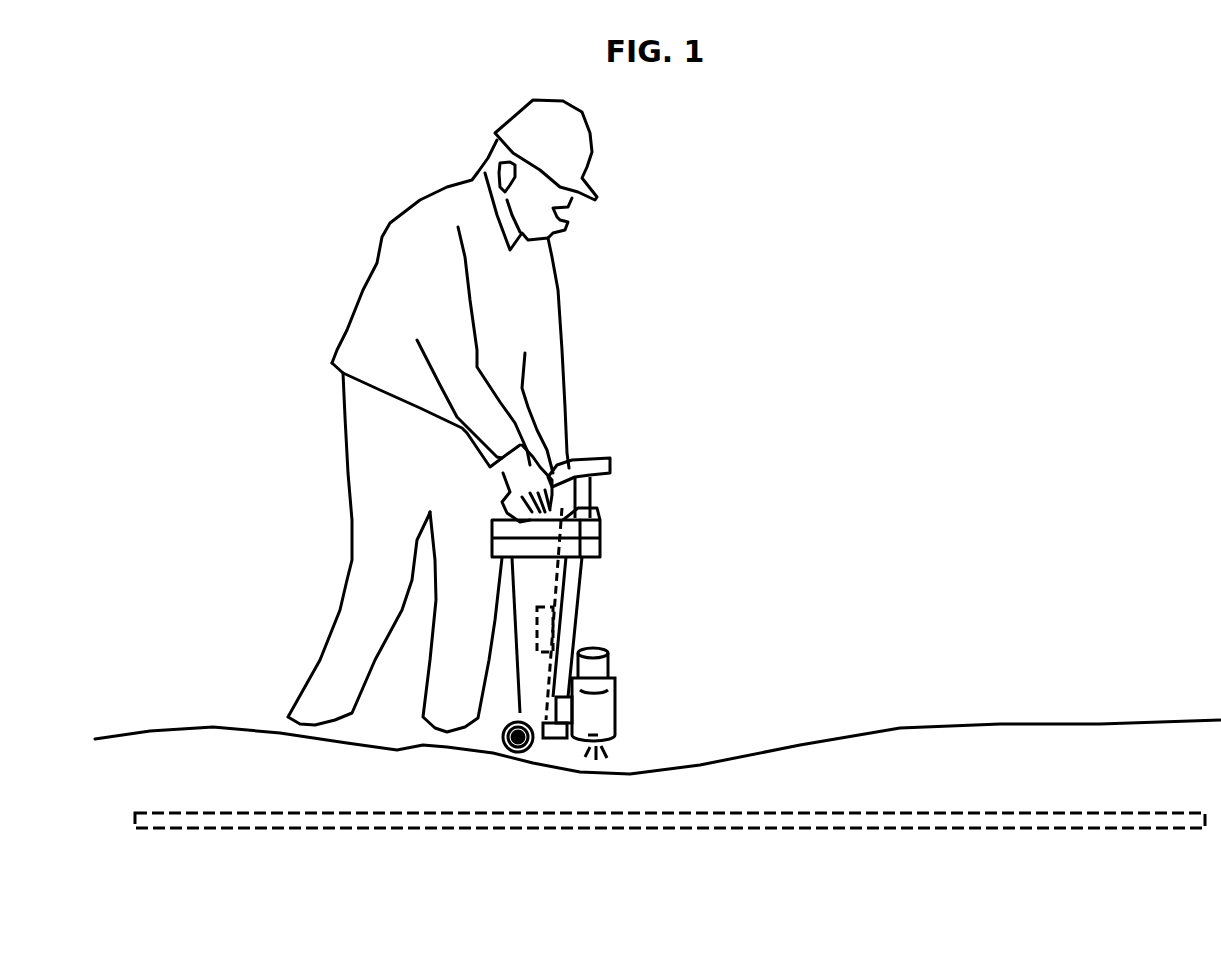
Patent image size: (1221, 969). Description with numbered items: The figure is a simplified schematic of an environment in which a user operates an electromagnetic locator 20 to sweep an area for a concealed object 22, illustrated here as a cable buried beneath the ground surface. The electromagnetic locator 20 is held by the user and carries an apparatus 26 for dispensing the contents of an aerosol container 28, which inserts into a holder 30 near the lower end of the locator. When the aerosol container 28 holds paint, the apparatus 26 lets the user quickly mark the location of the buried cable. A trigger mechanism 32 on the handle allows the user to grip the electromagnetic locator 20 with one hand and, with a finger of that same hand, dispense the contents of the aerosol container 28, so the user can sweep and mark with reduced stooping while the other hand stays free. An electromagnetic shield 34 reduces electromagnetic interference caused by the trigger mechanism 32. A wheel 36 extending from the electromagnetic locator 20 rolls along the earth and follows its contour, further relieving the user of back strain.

The electromagnetic locator 20 is at (613, 462).
The concealed object 22 is at (987, 812).
The apparatus for dispensing 26 is at (558, 593).
The aerosol container 28 is at (607, 652).
The holder 30 is at (617, 702).
The trigger mechanism 32 is at (572, 508).
The electromagnetic shield 34 is at (580, 615).
The wheel 36 is at (505, 748).